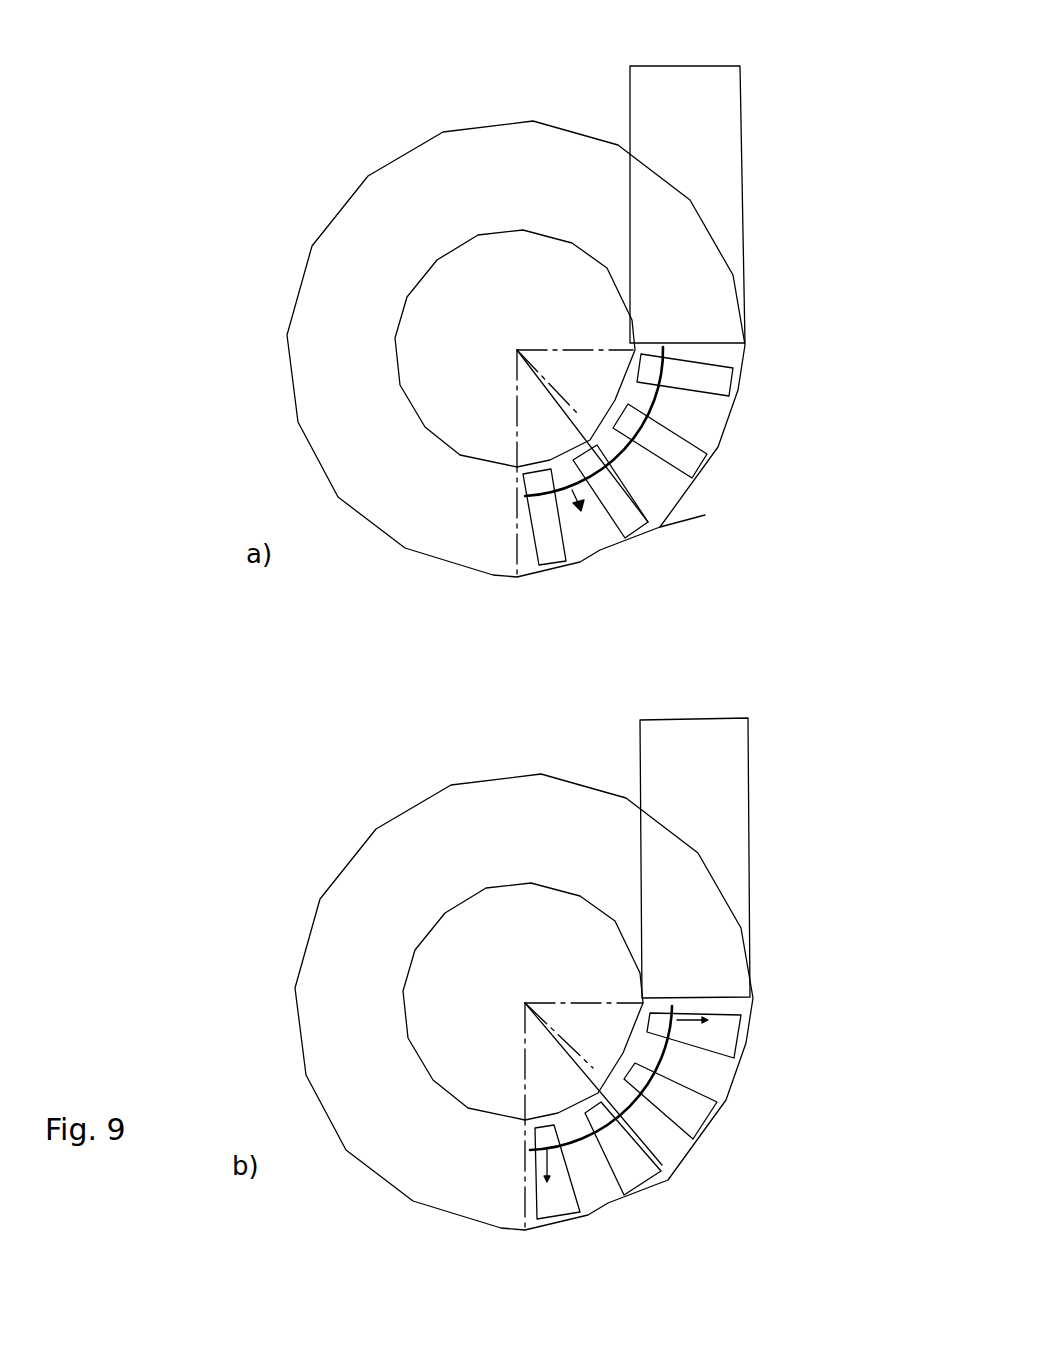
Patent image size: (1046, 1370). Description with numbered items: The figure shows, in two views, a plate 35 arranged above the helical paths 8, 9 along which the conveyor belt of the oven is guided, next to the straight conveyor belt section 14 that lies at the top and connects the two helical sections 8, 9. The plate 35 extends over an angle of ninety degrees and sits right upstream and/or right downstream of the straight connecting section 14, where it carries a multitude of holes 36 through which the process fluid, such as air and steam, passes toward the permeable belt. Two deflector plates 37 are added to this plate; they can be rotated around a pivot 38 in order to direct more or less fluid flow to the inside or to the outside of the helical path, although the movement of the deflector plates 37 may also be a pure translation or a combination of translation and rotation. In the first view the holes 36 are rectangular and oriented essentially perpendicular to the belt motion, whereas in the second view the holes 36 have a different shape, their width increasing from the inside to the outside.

The helical path 8 is at (502, 148).
The helical path 9 is at (519, 675).
The straight conveyor belt section 14 is at (730, 88).
The plate 35 is at (600, 543).
The holes 36 is at (685, 453).
The deflector plate 37 is at (660, 408).
The pivot 38 is at (517, 350).